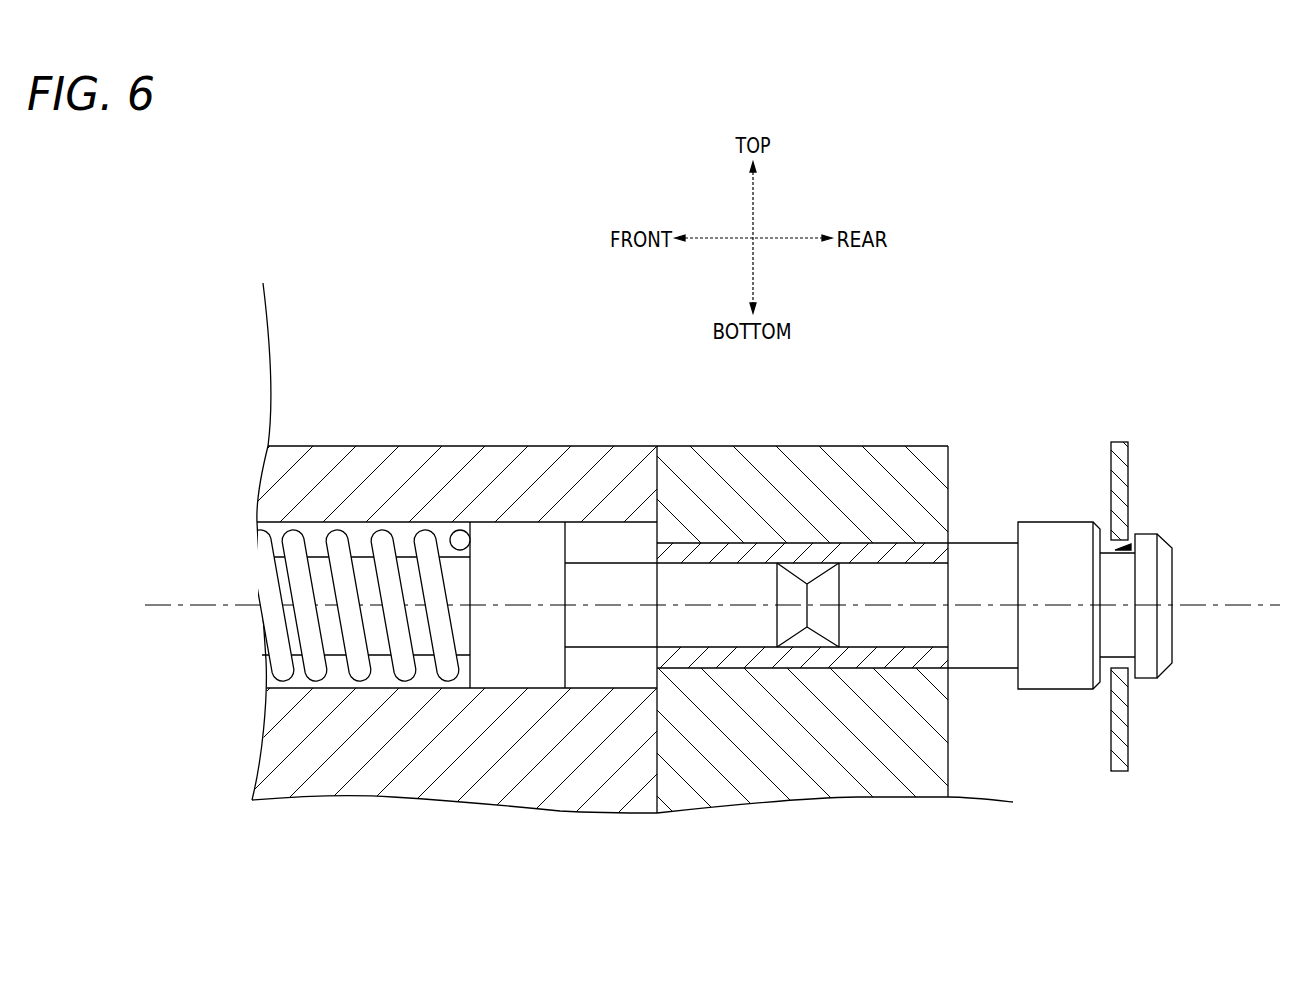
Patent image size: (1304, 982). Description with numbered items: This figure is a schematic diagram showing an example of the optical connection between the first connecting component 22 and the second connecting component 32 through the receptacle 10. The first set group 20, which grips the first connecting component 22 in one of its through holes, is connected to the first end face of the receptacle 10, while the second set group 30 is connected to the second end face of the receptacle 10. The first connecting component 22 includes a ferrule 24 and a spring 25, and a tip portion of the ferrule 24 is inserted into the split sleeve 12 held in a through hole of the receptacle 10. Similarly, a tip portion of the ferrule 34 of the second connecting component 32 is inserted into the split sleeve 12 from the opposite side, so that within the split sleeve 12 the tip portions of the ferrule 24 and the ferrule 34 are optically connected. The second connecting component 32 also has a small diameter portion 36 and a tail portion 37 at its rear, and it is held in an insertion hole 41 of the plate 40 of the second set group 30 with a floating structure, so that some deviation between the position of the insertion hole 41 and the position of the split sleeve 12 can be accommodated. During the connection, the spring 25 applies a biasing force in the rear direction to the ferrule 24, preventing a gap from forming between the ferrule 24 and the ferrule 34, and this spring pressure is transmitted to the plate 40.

The receptacle 10 is at (858, 452).
The split sleeve 12 is at (905, 548).
The first set group 20 is at (365, 467).
The first connecting component 22 is at (616, 547).
The ferrule 24 is at (794, 632).
The spring 25 is at (300, 582).
The second set group 30 is at (1117, 547).
The second connecting component 32 is at (980, 702).
The ferrule 34 is at (830, 625).
The small diameter portion 36 is at (1123, 627).
The tail portion 37 is at (1172, 575).
The plate 40 is at (1123, 470).
The insertion hole 41 is at (1133, 546).